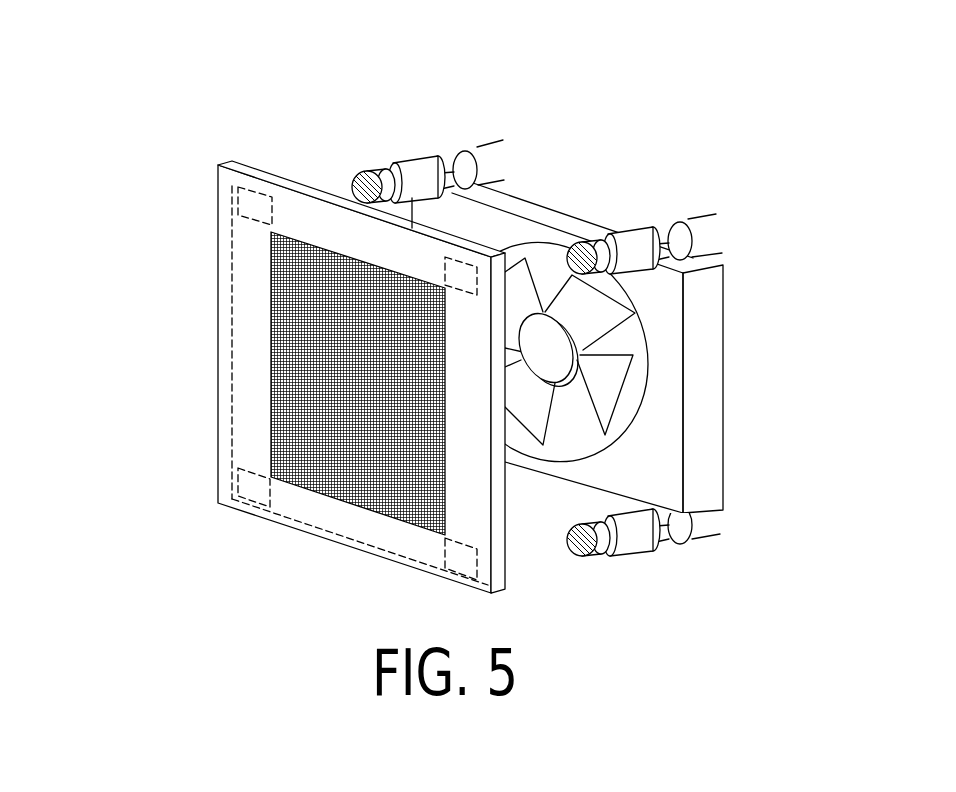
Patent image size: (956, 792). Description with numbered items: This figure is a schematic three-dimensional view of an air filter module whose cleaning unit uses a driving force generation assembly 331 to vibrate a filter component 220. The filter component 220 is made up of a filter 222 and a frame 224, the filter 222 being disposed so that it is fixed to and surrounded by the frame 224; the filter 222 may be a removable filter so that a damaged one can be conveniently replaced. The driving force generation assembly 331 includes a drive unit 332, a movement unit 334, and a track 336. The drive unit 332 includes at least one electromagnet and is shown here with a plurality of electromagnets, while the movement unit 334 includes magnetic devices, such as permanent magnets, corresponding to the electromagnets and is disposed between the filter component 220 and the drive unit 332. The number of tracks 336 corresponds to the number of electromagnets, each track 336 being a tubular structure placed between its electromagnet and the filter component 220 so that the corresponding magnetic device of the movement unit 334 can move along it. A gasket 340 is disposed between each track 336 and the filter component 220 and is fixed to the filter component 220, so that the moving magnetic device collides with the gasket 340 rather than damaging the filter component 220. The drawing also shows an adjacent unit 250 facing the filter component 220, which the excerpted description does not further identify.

The filter component 220 is at (283, 377).
The filter 222 is at (320, 425).
The frame 224 is at (224, 443).
The heat dissipation module with fan 250 is at (713, 392).
The driving force generation assembly 331 is at (492, 293).
The drive unit 332 is at (487, 134).
The movement unit 334 is at (333, 141).
The track 336 is at (410, 141).
The gasket 340 is at (217, 194).